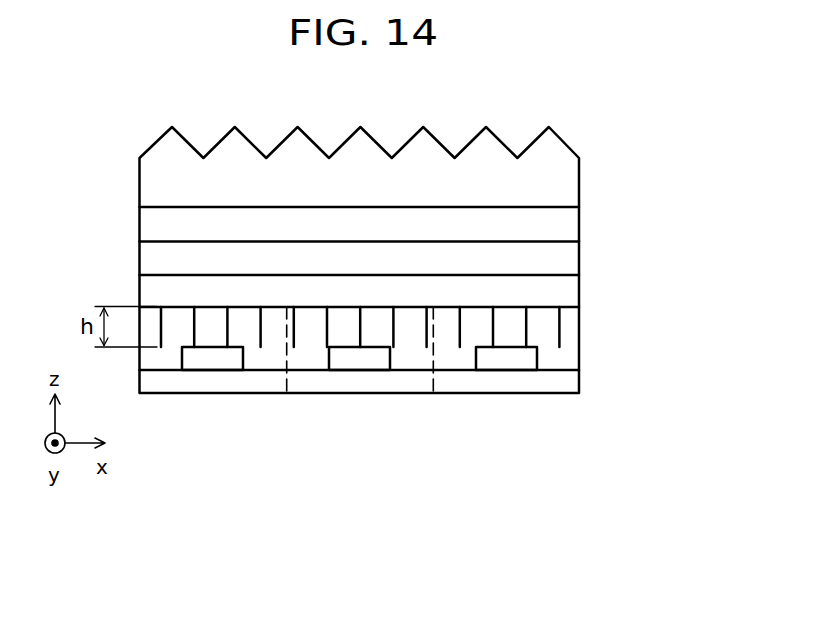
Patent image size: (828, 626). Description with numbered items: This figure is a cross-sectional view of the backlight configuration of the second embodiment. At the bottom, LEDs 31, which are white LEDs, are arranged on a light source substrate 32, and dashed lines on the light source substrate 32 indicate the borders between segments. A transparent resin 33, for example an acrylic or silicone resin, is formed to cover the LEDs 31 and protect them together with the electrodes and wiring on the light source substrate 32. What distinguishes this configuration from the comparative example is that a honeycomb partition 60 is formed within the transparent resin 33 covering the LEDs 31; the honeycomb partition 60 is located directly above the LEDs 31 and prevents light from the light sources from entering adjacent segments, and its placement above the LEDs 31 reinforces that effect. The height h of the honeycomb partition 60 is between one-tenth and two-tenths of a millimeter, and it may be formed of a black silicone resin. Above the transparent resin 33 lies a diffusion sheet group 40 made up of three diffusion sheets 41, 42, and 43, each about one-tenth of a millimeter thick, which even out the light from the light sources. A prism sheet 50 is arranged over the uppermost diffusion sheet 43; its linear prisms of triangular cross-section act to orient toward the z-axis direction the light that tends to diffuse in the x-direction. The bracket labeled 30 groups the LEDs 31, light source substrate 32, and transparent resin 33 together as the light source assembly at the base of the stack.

The prism sheet 50 is at (556, 184).
The diffusion sheet 43 is at (556, 230).
The diffusion sheet 42 is at (556, 262).
The diffusion sheet 41 is at (395, 292).
The diffusion sheet group 40 is at (423, 257).
The honeycomb partition 60 is at (560, 338).
The LED 31 is at (215, 360).
The light source substrate 32 is at (362, 360).
The transparent resin 33 is at (494, 401).
The light emitting elements 30 is at (359, 424).